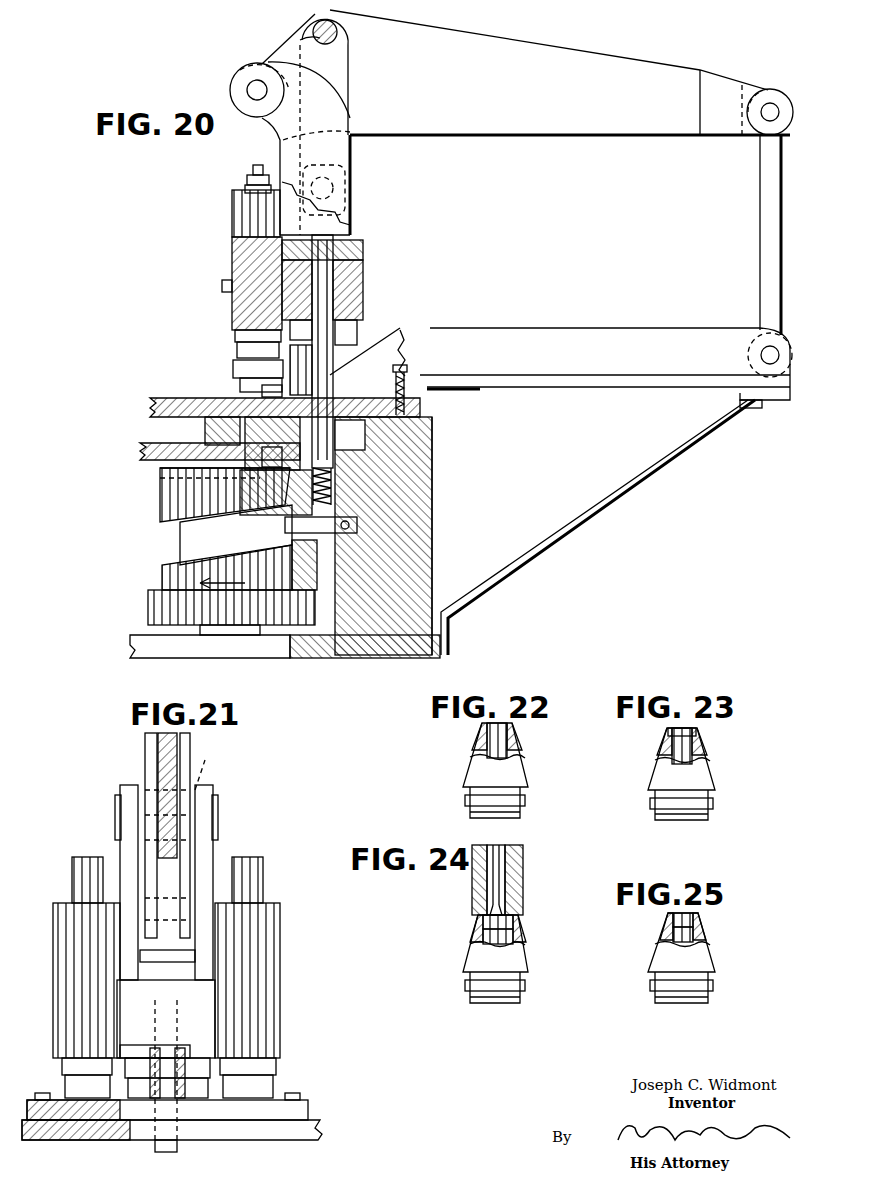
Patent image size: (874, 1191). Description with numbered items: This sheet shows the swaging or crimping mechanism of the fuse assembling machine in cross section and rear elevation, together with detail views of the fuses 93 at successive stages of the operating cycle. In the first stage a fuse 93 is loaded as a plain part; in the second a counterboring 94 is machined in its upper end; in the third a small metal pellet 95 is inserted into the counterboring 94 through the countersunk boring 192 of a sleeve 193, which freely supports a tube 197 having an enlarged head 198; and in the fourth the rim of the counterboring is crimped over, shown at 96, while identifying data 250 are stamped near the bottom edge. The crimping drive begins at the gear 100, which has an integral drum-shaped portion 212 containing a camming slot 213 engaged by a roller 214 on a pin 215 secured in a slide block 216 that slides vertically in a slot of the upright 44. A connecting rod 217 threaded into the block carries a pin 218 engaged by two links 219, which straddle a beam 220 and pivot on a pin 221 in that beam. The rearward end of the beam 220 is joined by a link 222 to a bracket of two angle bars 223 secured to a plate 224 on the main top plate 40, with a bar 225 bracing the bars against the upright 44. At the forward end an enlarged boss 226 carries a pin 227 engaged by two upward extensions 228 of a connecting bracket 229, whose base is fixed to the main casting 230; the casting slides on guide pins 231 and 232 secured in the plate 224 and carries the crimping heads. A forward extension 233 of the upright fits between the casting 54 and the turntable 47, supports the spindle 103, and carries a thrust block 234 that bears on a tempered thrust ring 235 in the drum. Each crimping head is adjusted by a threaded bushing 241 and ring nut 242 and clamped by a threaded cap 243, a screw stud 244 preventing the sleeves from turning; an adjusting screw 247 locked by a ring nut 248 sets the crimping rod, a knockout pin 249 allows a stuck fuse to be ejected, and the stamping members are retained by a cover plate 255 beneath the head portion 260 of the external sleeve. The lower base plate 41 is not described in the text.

In FIG. 20, the main top plate 40 is at (432, 422).
In FIG. 21, the main top plate 40 is at (320, 1132).
In FIG. 20, the bottom plate 41 is at (345, 655).
In FIG. 20, the upright 44 is at (433, 465).
In FIG. 20, the turntable 47 is at (152, 405).
In FIG. 20, the casting 54 is at (142, 447).
In FIG. 22, the fuse 93 is at (520, 775).
In FIG. 23, the fuse 93 is at (710, 775).
In FIG. 24, the fuse 93 is at (520, 960).
In FIG. 25, the fuse 93 is at (712, 953).
In FIG. 23, the counterboring 94 is at (700, 732).
In FIG. 24, the metal pellet 95 is at (520, 928).
In FIG. 25, the metal pellet 95 is at (700, 925).
In FIG. 25, the crimped rim 96 is at (666, 916).
In FIG. 20, the gear 100 is at (160, 607).
In FIG. 20, the spindle 103 is at (200, 478).
In FIG. 24, the countersunk boring 192 is at (478, 928).
In FIG. 24, the sleeve 193 is at (515, 884).
In FIG. 24, the tube 197 is at (520, 862).
In FIG. 24, the enlarged head 198 is at (520, 905).
In FIG. 20, the drum-shaped portion 212 is at (175, 515).
In FIG. 20, the camming slot 213 is at (180, 535).
In FIG. 20, the roller 214 is at (290, 568).
In FIG. 20, the pin 215 is at (283, 523).
In FIG. 20, the slide block 216 is at (340, 542).
In FIG. 20, the connecting rod 217 is at (335, 300).
In FIG. 21, the connecting rod 217 is at (178, 1150).
In FIG. 20, the pin 218 is at (346, 178).
In FIG. 20, the links 219 is at (345, 60).
In FIG. 21, the links 219 is at (160, 760).
In FIG. 20, the beam 220 is at (528, 46).
In FIG. 21, the beam 220 is at (160, 780).
In FIG. 20, the pin 221 is at (314, 30).
In FIG. 20, the link 222 is at (762, 170).
In FIG. 20, the angle bars 223 is at (614, 332).
In FIG. 21, the angle bars 223 is at (125, 1050).
In FIG. 20, the plate 224 is at (418, 382).
In FIG. 21, the plate 224 is at (305, 1108).
In FIG. 20, the bar 225 is at (680, 448).
In FIG. 20, the boss 226 is at (252, 62).
In FIG. 21, the boss 226 is at (198, 752).
In FIG. 20, the pin 227 is at (248, 88).
In FIG. 20, the upward extensions 228 is at (325, 97).
In FIG. 21, the upward extensions 228 is at (200, 790).
In FIG. 20, the connecting bracket 229 is at (365, 250).
In FIG. 21, the connecting bracket 229 is at (200, 972).
In FIG. 20, the main casting 230 is at (240, 252).
In FIG. 21, the main casting 230 is at (265, 928).
In FIG. 20, the guide pin 231 is at (300, 350).
In FIG. 21, the guide pin 231 is at (253, 872).
In FIG. 21, the guide pin 232 is at (80, 872).
In FIG. 20, the forward extension 233 is at (206, 430).
In FIG. 20, the thrust block 234 is at (265, 480).
In FIG. 20, the thrust ring 235 is at (160, 479).
In FIG. 20, the threaded bushing 241 is at (237, 350).
In FIG. 21, the threaded bushing 241 is at (62, 1062).
In FIG. 20, the adjusting ring nut 242 is at (235, 335).
In FIG. 20, the threaded cap 243 is at (240, 222).
In FIG. 20, the screw stud 244 is at (222, 286).
In FIG. 20, the adjusting screw 247 is at (246, 181).
In FIG. 20, the ring nut 248 is at (245, 195).
In FIG. 20, the knockout pin 249 is at (258, 168).
In FIG. 25, the identifying data 250 is at (712, 975).
In FIG. 20, the cover plate 255 is at (240, 388).
In FIG. 20, the head portion 260 is at (233, 369).
In FIG. 21, the head portion 260 is at (65, 1085).